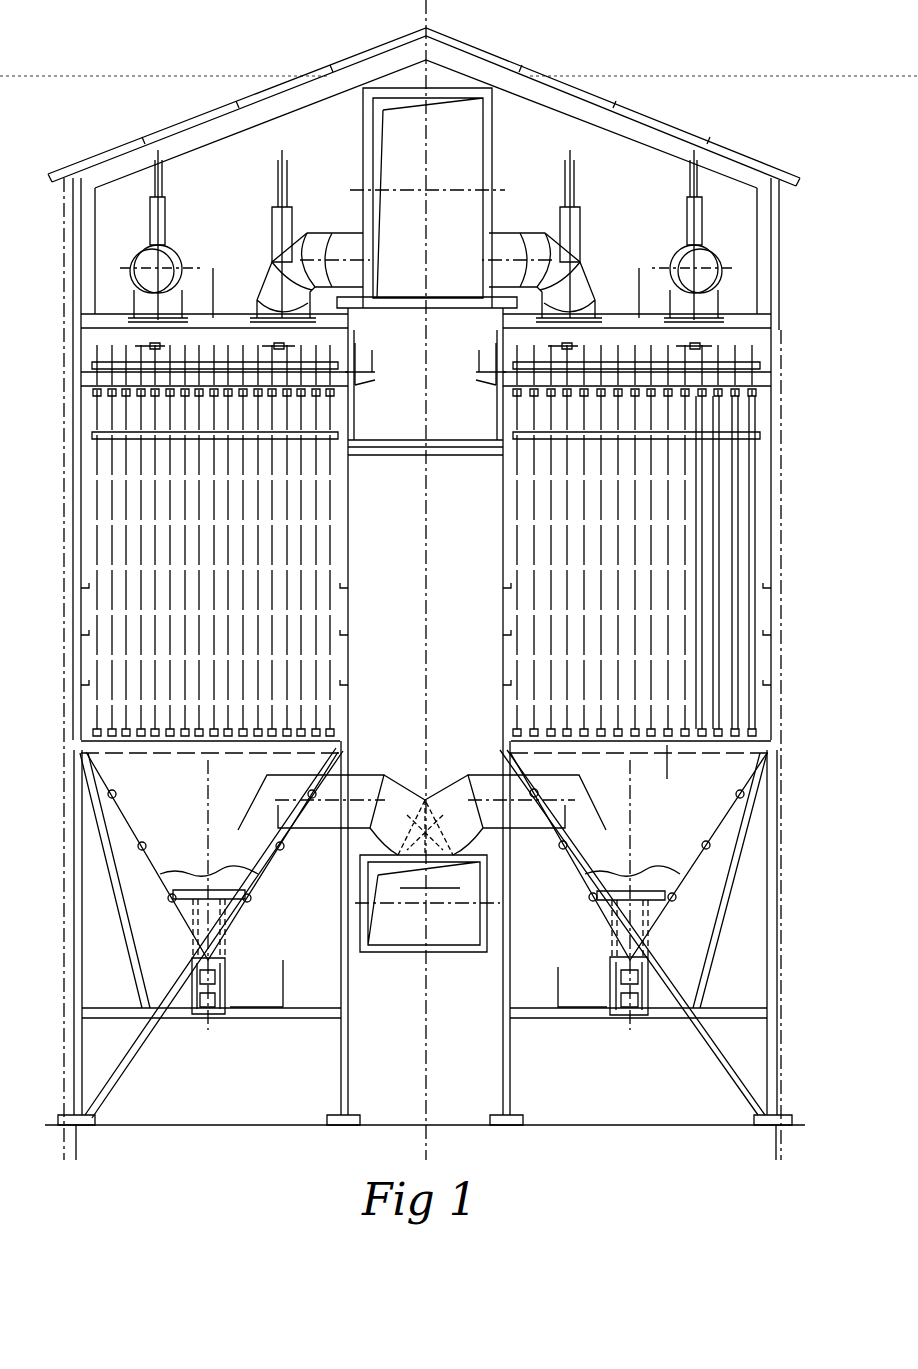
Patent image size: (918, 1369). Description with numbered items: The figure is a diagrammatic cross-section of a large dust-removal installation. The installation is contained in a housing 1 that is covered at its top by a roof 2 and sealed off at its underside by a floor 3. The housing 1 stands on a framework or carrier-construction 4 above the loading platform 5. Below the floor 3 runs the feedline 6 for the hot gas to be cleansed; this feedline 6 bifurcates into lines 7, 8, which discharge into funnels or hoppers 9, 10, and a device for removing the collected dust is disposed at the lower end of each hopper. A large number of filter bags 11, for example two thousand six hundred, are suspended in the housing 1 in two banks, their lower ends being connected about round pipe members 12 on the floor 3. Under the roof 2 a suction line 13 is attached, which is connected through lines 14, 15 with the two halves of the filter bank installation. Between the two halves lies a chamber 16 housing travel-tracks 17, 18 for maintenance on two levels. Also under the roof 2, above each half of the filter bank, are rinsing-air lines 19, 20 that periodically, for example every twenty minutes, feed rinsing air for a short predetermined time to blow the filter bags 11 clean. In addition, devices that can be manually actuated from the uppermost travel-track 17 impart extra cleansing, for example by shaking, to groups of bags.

The housing 1 is at (772, 500).
The roof 2 is at (517, 62).
The floor 3 is at (667, 779).
The framework or carrier-construction 4 is at (770, 945).
The loading platform 5 is at (778, 1118).
The feedline 6 is at (395, 912).
The line 7 is at (390, 795).
The line 8 is at (470, 792).
The funnel or hopper 9 is at (175, 827).
The funnel or hopper 10 is at (686, 827).
The filter bags 11 is at (283, 518).
The round pipe members 12 is at (735, 790).
The suction line 13 is at (464, 170).
The line 14 is at (317, 246).
The line 15 is at (536, 246).
The chamber 16 is at (478, 532).
The travel-track 17 is at (392, 446).
The travel-track 18 is at (428, 798).
The rinsing-air line 19 is at (170, 262).
The rinsing-air line 20 is at (690, 265).